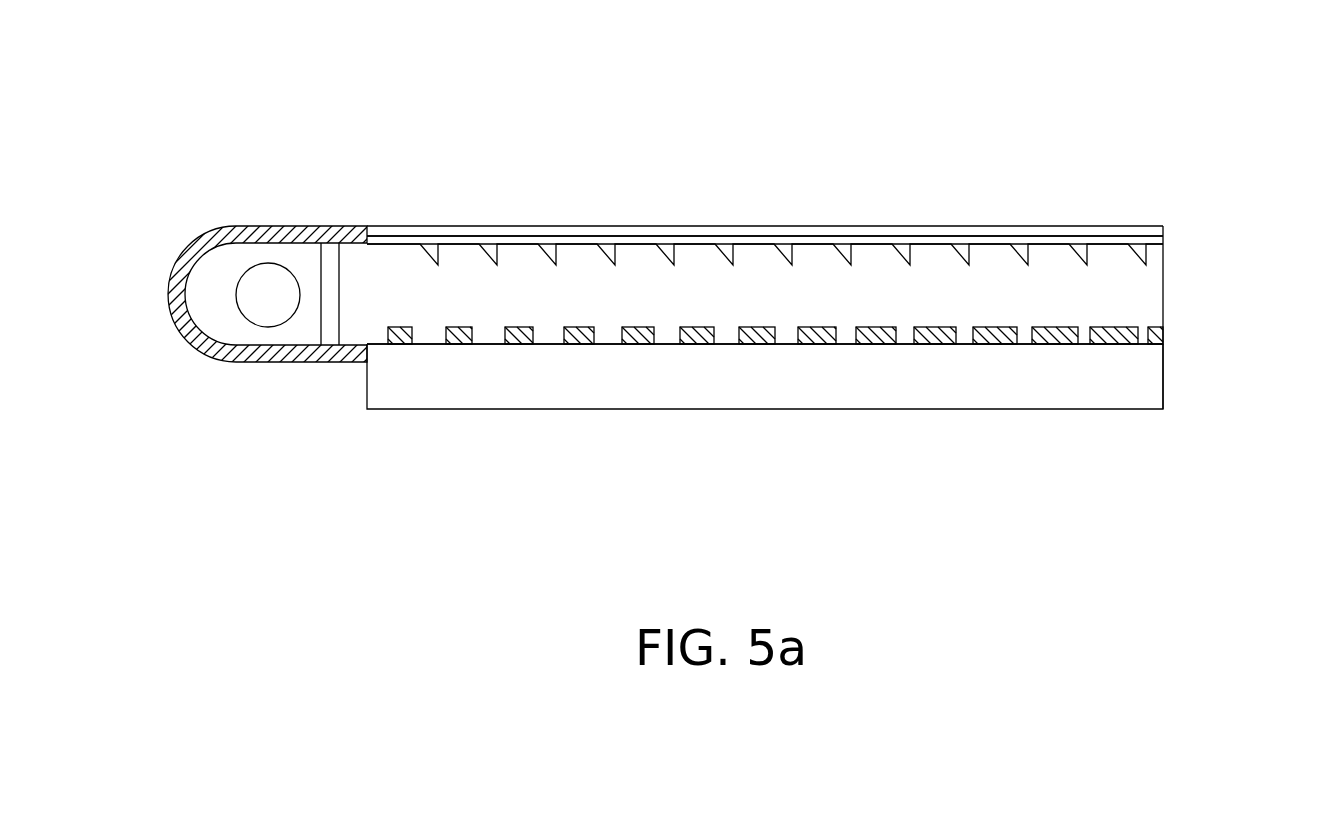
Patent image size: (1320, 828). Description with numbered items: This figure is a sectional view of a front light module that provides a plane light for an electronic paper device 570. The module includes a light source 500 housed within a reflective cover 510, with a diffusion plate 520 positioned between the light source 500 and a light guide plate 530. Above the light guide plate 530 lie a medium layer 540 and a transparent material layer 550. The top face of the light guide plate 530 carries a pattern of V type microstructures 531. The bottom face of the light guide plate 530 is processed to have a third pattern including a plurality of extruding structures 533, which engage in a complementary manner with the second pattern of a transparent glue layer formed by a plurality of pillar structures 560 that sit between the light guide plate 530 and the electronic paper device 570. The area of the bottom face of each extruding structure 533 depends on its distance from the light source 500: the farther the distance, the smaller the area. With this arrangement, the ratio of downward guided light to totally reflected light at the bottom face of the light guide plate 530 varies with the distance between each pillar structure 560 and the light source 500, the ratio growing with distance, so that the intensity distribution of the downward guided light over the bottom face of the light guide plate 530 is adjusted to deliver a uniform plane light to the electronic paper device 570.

The light source 500 is at (253, 313).
The reflective cover 510 is at (200, 233).
The diffusion plate 520 is at (330, 262).
The light guide plate 530 is at (831, 302).
The V type microstructures 531 is at (550, 248).
The extruding structures 533 is at (545, 337).
The medium layer 540 is at (1152, 241).
The transparent material layer 550 is at (717, 233).
The pillar structures 560 is at (1158, 337).
The electronic paper device 570 is at (1132, 382).